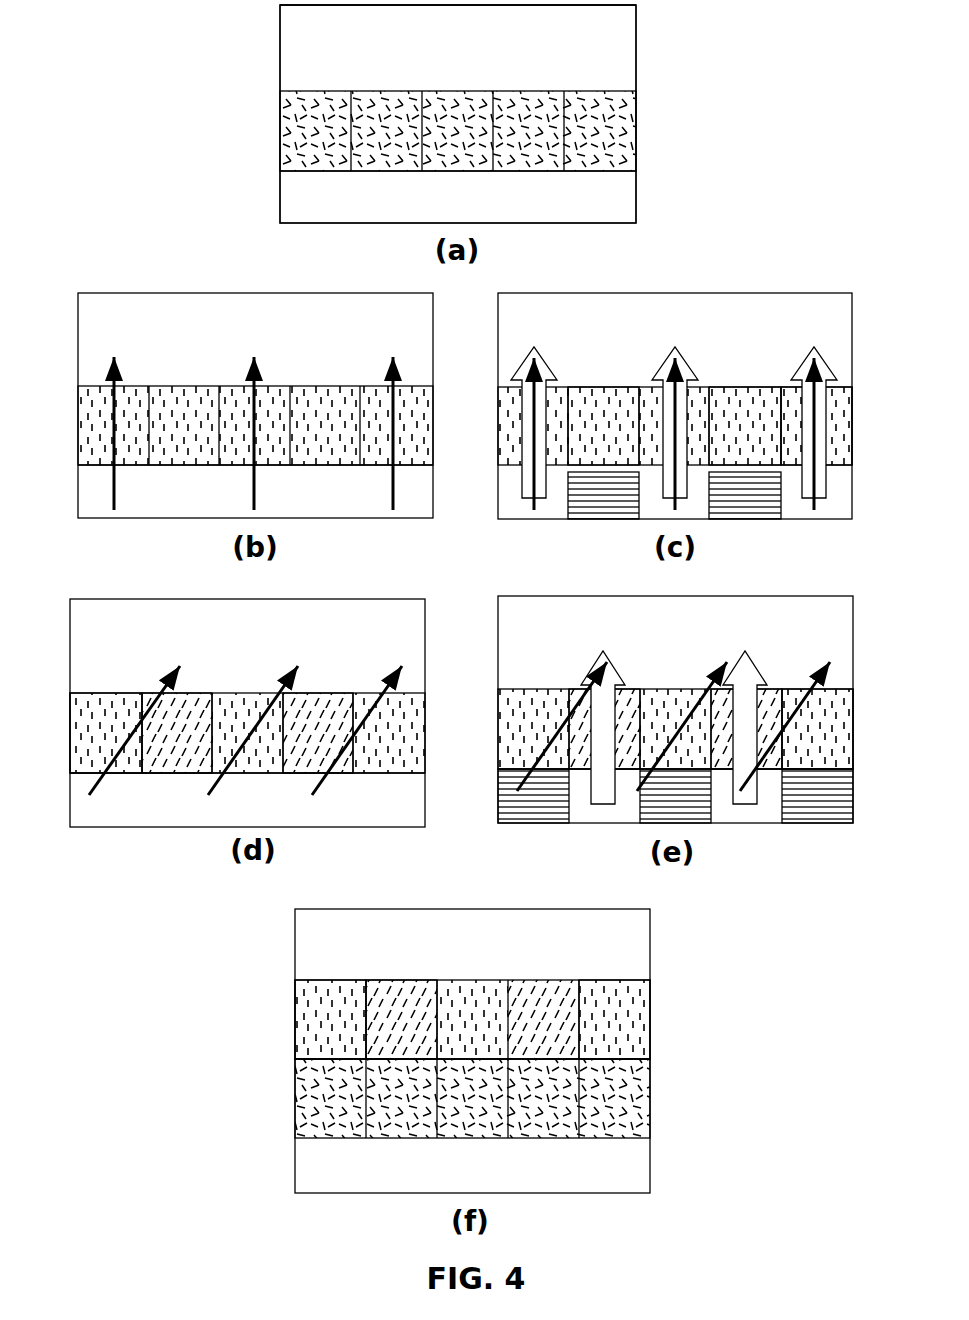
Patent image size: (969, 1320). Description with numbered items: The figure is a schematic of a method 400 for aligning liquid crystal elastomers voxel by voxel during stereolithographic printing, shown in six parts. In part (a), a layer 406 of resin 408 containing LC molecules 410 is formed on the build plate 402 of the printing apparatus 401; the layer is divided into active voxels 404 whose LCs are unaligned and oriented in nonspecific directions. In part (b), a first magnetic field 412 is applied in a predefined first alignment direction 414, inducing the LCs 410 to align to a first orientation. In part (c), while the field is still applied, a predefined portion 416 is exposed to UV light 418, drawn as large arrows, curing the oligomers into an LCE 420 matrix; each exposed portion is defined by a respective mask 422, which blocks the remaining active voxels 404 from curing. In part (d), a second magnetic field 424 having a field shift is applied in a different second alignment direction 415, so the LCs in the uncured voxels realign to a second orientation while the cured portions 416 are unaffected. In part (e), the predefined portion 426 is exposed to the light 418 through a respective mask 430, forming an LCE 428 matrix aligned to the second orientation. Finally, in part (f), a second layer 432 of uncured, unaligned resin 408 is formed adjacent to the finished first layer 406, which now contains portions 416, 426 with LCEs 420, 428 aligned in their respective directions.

The method 400 is at (150, 64).
The printing apparatus 401 is at (644, 21).
The build plate 402 is at (587, 34).
The voxel 404 is at (583, 90).
The layer 406 is at (278, 100).
The resin 408 is at (287, 138).
The LC molecules 410 is at (293, 155).
The first magnetic field 412 is at (120, 327).
The first alignment direction 414 is at (112, 493).
The second alignment direction 415 is at (90, 791).
The predefined portion 416 is at (568, 380).
The light 418 is at (870, 641).
The LCE matrix 420 is at (840, 438).
The mask 422 is at (587, 503).
The second magnetic field 424 is at (138, 627).
The predefined portion 426 is at (634, 682).
The LCE matrix 428 is at (775, 763).
The mask 430 is at (517, 813).
The second layer 432 is at (293, 1100).